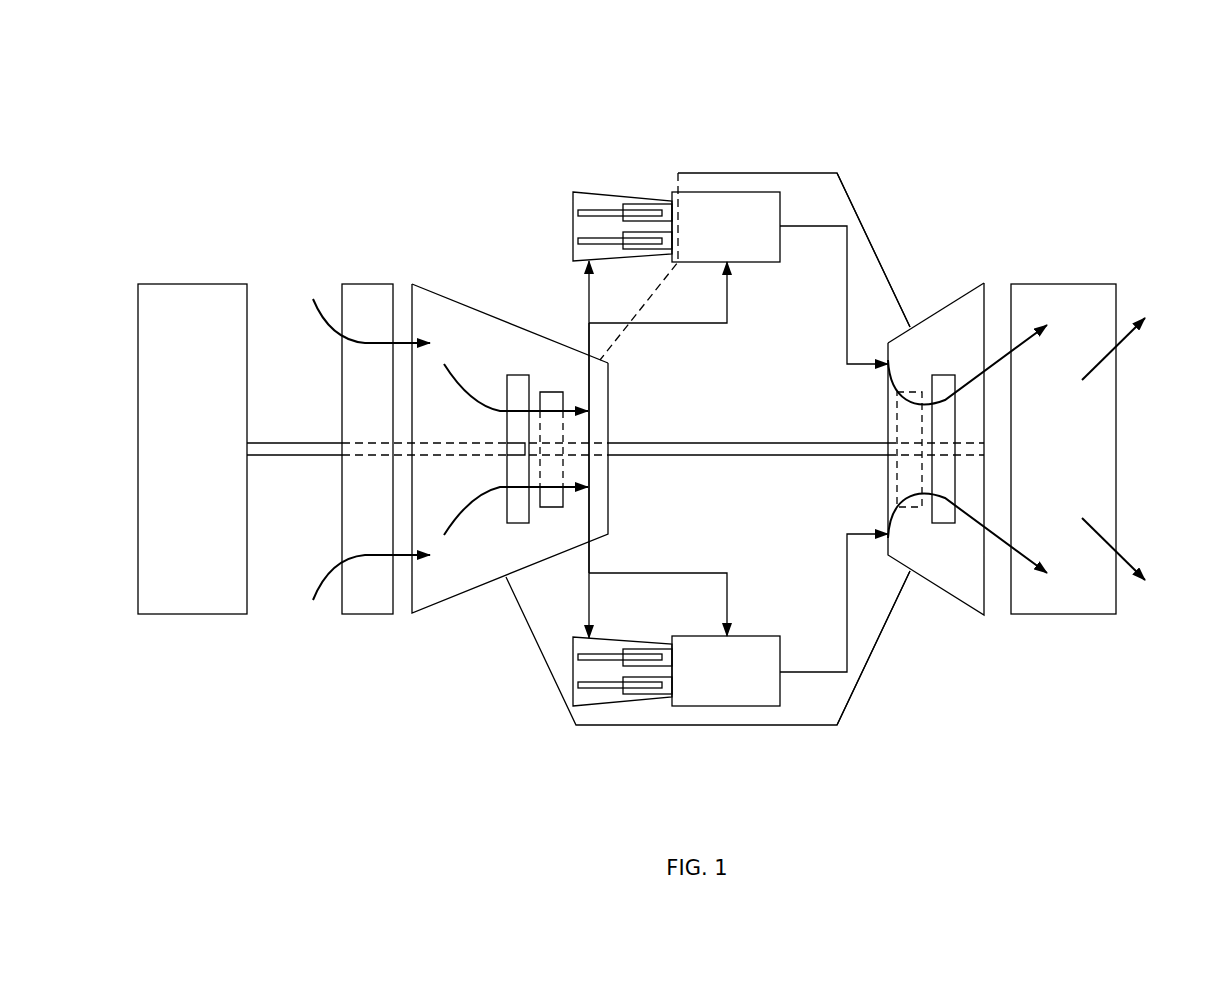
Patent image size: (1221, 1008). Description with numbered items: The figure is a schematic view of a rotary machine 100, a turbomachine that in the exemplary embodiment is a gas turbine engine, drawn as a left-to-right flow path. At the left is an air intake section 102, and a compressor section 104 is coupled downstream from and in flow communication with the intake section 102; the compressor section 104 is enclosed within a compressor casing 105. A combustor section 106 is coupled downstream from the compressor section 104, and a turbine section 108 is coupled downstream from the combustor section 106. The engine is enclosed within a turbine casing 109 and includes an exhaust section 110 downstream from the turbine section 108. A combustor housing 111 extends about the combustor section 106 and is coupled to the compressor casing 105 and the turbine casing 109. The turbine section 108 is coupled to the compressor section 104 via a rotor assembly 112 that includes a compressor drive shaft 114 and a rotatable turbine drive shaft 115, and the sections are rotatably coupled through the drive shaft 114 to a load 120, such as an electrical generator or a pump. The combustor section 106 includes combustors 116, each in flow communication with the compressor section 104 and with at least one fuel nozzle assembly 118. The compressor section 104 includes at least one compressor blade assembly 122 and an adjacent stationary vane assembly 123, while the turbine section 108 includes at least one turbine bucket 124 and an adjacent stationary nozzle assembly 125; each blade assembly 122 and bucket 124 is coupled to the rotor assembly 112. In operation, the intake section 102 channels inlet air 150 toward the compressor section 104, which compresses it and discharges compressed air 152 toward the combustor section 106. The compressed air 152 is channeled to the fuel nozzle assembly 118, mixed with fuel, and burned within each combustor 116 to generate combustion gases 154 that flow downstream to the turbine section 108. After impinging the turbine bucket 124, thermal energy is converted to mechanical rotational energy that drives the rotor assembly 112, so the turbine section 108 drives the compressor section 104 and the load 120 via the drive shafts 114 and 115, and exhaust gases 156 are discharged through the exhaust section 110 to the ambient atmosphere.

The rotary machine 100 is at (360, 112).
The air intake section 102 is at (368, 284).
The compressor section 104 is at (423, 278).
The compressor casing 105 is at (467, 304).
The combustor section 106 is at (880, 208).
The turbine section 108 is at (960, 283).
The turbine casing 109 is at (917, 322).
The exhaust section 110 is at (1062, 284).
The combustor housing 111 is at (710, 172).
The rotor assembly 112 is at (685, 432).
The compressor drive shaft 114 is at (465, 455).
The rotatable drive shaft 115 is at (968, 455).
The combustor 116 is at (773, 192).
The fuel nozzle assembly 118 is at (607, 195).
The load 120 is at (194, 284).
The compressor blade assembly 122 is at (550, 508).
The stationary vane assembly 123 is at (517, 524).
The turbine bucket 124 is at (912, 508).
The stationary nozzle assembly 125 is at (948, 524).
The inlet air 150 is at (330, 322).
The compressed air 152 is at (467, 393).
The combustion gases 154 is at (1022, 347).
The exhaust gases 156 is at (1148, 338).